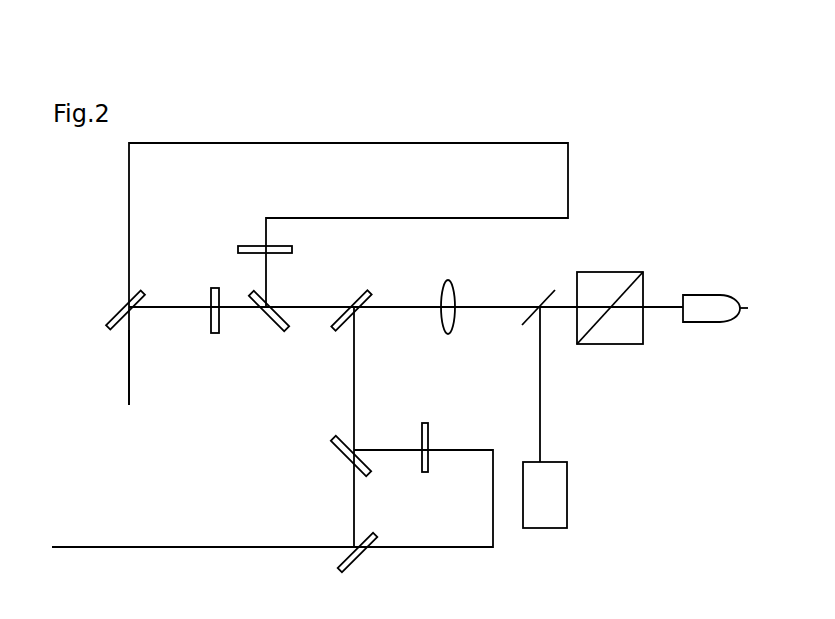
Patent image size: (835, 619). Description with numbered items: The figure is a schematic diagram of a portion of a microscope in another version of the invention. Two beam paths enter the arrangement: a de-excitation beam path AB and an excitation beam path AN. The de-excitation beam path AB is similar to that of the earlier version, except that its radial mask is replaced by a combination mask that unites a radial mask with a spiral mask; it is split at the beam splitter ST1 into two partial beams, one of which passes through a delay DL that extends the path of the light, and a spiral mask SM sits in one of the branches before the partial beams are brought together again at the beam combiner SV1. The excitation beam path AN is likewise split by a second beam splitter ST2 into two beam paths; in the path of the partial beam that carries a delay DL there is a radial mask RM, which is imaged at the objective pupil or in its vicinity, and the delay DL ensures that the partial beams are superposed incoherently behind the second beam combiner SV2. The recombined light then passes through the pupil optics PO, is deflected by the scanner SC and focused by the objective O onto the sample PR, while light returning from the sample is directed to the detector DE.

The delay DL is at (348, 358).
The excitation beam path AN is at (203, 528).
The de-excitation beam path AB is at (72, 370).
The beam splitter ST1 is at (115, 305).
The spiral mask SM is at (288, 245).
The beam combiner SV1 is at (284, 330).
The pupil optics PO is at (432, 326).
The scanner SC is at (605, 291).
The objective O is at (705, 288).
The sample PR is at (761, 300).
The detector DE is at (567, 495).
The second beam combiner SV2 is at (324, 456).
The radial mask RM is at (421, 463).
The second beam splitter ST2 is at (330, 561).